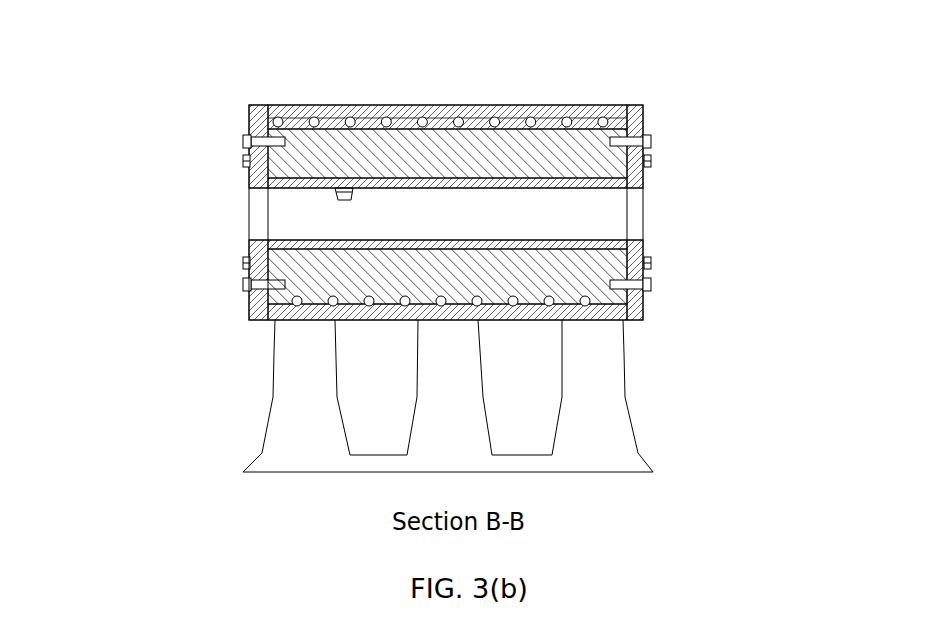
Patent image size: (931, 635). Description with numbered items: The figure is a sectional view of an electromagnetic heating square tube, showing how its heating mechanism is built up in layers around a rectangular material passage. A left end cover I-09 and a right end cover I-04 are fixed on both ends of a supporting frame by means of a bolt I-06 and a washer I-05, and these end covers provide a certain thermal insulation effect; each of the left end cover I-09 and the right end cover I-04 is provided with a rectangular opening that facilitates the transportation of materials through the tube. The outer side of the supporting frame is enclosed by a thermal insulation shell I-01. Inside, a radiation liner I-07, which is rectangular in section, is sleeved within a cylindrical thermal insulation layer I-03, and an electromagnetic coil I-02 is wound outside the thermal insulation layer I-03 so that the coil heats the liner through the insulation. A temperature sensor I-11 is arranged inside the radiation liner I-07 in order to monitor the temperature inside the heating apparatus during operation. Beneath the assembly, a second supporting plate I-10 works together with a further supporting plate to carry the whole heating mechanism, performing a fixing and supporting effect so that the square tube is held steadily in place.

The thermal insulation shell I-01 is at (525, 101).
The electromagnetic coil I-02 is at (807, 83).
The thermal insulation layer I-03 is at (807, 136).
The right end cover I-04 is at (464, 248).
The washer I-05 is at (807, 222).
The bolt I-06 is at (807, 258).
The radiation liner I-07 is at (807, 342).
The left end cover I-09 is at (190, 262).
The supporting plate 2 I-10 is at (190, 222).
The temperature sensor I-11 is at (190, 172).